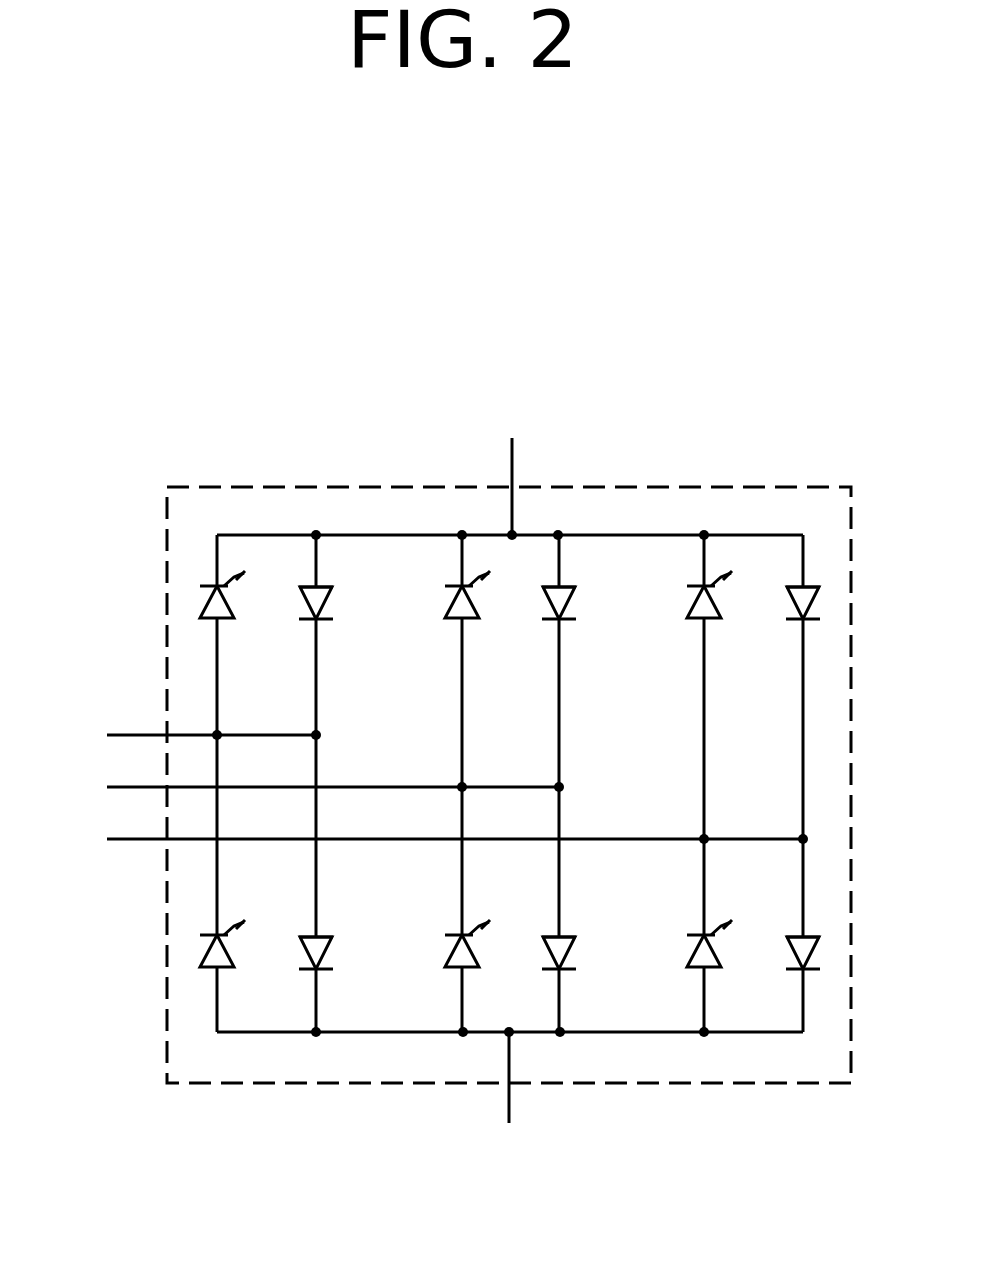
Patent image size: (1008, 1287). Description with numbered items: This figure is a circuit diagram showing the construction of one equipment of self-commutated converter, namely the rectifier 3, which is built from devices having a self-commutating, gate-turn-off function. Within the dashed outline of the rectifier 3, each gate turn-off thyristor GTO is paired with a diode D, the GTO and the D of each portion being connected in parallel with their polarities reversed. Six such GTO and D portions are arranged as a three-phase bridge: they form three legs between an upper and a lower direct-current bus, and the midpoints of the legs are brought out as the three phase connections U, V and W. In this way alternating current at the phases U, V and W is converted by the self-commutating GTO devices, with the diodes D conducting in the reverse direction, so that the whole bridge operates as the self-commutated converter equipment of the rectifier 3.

The rectifier 3 is at (790, 487).
The gate turn-off thyristor GTO is at (205, 618).
The diode D is at (328, 597).
The U-phase terminal U is at (186, 729).
The V-phase terminal V is at (307, 783).
The W-phase terminal W is at (426, 835).